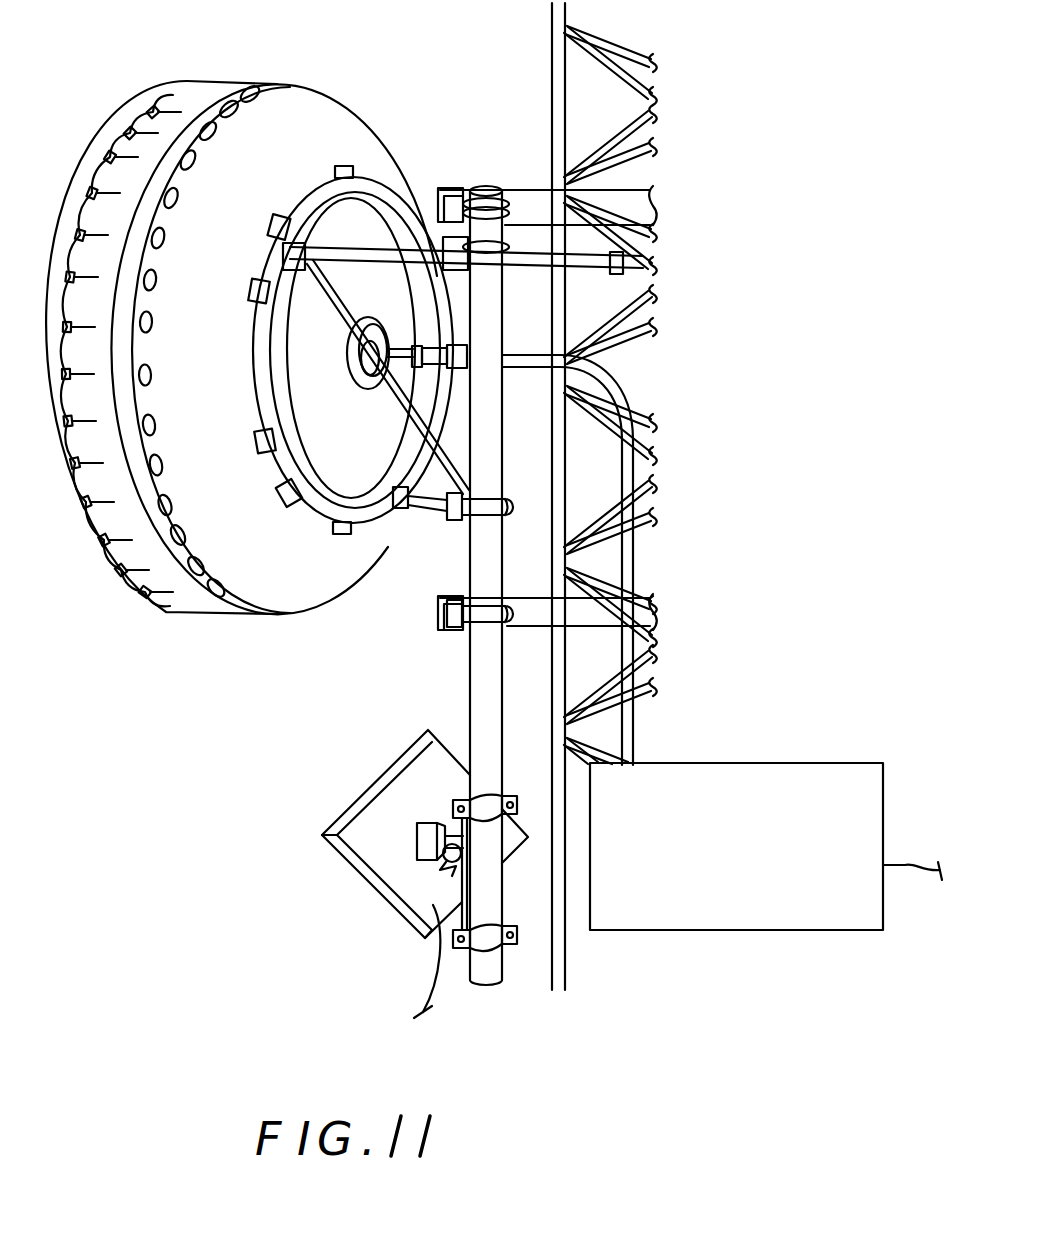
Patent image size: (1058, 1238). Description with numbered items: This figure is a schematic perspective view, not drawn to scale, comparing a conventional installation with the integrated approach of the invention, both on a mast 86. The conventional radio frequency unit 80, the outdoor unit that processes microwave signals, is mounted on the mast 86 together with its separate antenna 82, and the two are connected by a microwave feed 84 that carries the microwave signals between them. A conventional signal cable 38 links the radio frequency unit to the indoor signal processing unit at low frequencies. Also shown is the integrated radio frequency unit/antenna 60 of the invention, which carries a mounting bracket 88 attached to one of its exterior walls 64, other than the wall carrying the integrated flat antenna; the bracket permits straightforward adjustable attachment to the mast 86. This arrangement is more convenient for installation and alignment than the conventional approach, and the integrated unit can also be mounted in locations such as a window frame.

The signal cable 38 is at (420, 997).
The integrated radio frequency unit/antenna 60 is at (397, 884).
The exterior wall 64 is at (365, 848).
The conventional radio frequency unit 80 is at (817, 764).
The antenna 82 is at (276, 598).
The microwave feed 84 is at (634, 720).
The mast 86 is at (478, 683).
The mounting bracket 88 is at (438, 832).